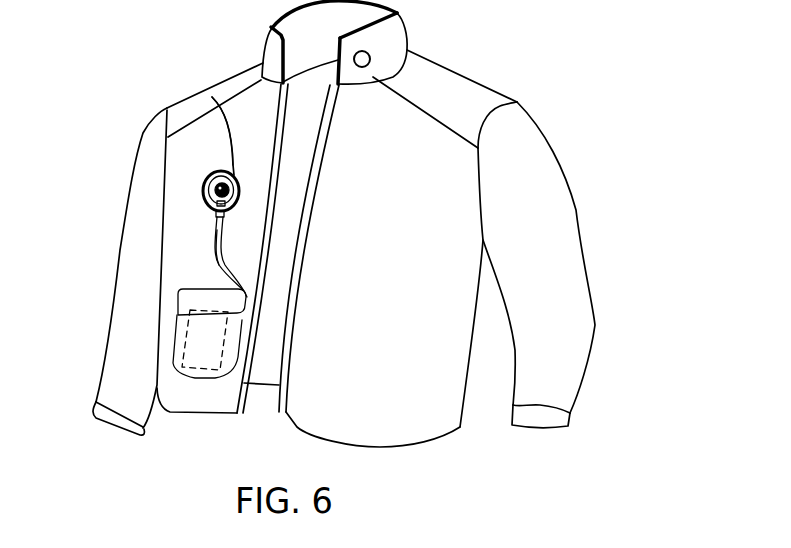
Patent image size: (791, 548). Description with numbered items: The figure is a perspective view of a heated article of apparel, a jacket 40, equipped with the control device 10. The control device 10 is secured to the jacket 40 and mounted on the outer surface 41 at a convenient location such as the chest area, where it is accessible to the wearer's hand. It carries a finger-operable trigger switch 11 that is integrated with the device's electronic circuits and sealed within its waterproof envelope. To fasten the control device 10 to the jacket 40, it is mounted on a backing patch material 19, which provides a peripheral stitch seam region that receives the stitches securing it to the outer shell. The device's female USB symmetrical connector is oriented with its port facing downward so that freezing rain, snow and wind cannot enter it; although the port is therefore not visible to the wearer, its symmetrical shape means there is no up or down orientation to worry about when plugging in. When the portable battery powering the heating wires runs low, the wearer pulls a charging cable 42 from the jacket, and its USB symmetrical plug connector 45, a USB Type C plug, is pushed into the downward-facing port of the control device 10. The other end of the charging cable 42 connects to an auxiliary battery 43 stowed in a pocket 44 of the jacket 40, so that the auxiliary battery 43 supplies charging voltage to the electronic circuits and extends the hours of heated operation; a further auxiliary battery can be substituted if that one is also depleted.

The control device 10 is at (213, 150).
The finger-operable trigger switch 11 is at (215, 158).
The backing patch material 19 is at (207, 210).
The jacket 40 is at (201, 238).
The outer surface 41 is at (183, 195).
The charging cable 42 is at (207, 258).
The auxiliary battery 43 is at (178, 315).
The pocket 44 is at (173, 350).
The USB symmetrical plug connector 45 is at (202, 197).